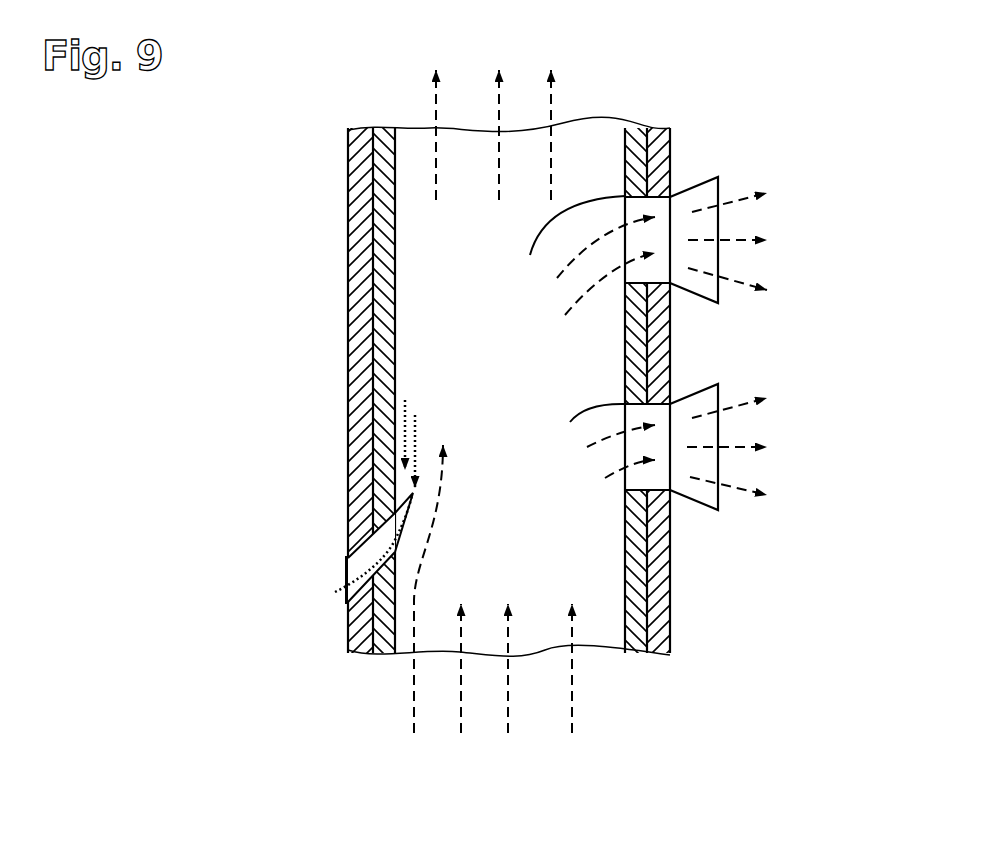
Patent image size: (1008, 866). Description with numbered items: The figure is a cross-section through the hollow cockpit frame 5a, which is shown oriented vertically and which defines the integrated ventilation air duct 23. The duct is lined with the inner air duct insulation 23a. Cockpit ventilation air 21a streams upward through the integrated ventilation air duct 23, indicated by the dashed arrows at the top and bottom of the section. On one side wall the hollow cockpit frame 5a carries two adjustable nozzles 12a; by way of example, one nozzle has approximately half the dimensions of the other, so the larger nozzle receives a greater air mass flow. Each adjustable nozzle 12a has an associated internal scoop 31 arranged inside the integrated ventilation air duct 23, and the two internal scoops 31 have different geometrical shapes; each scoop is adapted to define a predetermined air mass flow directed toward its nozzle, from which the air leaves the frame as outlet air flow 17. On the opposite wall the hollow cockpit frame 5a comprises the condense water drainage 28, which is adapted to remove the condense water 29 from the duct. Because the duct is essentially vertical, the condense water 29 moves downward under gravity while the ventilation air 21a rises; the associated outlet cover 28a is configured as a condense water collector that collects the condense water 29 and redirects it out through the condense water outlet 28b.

The hollow cockpit frame 5a is at (462, 386).
The adjustable nozzle 12a is at (700, 180).
The outlet air flow 17 is at (740, 271).
The cockpit ventilation air 21a is at (433, 102).
The integrated ventilation air duct 23 is at (384, 325).
The inner air duct insulation 23a is at (383, 290).
The condense water drainage 28 is at (345, 573).
The outlet cover 28a is at (383, 485).
The condense water outlet 28b is at (345, 603).
The condense water 29 is at (380, 428).
The internal scoop 31 is at (545, 225).